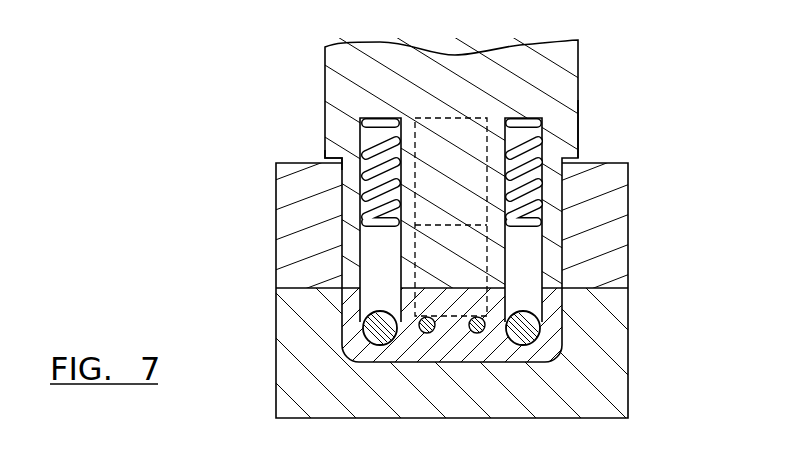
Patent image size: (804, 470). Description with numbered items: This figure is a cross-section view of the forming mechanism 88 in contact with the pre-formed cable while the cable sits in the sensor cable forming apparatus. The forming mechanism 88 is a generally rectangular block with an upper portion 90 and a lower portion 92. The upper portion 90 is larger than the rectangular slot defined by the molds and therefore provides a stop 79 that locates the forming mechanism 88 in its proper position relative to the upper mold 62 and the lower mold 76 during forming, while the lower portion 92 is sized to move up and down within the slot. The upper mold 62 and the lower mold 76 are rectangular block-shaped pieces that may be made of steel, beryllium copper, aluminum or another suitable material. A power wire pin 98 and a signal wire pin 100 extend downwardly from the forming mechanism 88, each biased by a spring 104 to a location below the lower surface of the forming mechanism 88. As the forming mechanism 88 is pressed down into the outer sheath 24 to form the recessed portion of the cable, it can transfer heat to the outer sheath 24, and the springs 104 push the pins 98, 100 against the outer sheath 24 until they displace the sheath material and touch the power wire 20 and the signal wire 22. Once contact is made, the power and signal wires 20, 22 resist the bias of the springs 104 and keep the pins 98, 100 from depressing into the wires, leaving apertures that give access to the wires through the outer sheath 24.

The forming mechanism 88 is at (586, 60).
The upper portion 90 is at (578, 140).
The lower portion 92 is at (565, 180).
The upper mold 62 is at (276, 188).
The stop 79 is at (323, 161).
The spring 104 is at (365, 129).
The power wire pin 98 is at (370, 293).
The signal wire pin 100 is at (445, 262).
The lower mold 76 is at (277, 301).
The outer sheath 24 is at (547, 348).
The power wire 20 is at (377, 330).
The signal wire 22 is at (477, 334).